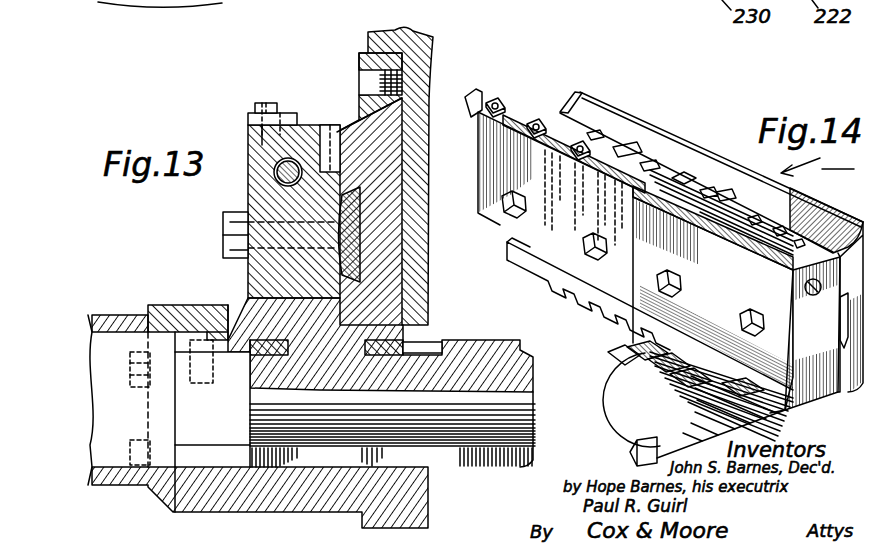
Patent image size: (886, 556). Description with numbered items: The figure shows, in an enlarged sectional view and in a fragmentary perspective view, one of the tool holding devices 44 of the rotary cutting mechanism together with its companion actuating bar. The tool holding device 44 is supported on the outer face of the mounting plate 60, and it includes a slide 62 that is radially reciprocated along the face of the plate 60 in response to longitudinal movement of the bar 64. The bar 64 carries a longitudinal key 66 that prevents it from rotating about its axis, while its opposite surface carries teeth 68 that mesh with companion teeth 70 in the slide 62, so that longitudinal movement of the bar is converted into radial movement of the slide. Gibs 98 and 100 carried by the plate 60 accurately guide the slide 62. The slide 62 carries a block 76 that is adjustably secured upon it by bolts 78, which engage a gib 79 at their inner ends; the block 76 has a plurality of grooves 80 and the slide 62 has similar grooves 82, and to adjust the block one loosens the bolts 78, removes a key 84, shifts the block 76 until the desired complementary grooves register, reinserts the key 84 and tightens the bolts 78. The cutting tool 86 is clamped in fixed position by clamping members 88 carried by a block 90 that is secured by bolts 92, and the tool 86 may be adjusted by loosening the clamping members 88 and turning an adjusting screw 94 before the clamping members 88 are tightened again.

In FIG. 14, the tool holding device 44 is at (817, 161).
In FIG. 13, the mounting plate 60 is at (408, 46).
In FIG. 13, the slide 62 is at (387, 290).
In FIG. 14, the slide 62 is at (823, 216).
In FIG. 14, the bar 64 is at (617, 403).
In FIG. 14, the longitudinal key 66 is at (637, 452).
In FIG. 14, the teeth 68 is at (640, 354).
In FIG. 13, the teeth 70 is at (410, 348).
In FIG. 14, the teeth 70 is at (717, 350).
In FIG. 13, the block 76 is at (265, 272).
In FIG. 14, the block 76 is at (661, 193).
In FIG. 13, the bolts 78 is at (236, 238).
In FIG. 14, the bolts 78 is at (747, 310).
In FIG. 13, the gib 79 is at (363, 205).
In FIG. 14, the gib 79 is at (842, 340).
In FIG. 14, the grooves 80 is at (603, 146).
In FIG. 14, the grooves 82 is at (630, 158).
In FIG. 13, the key 84 is at (326, 128).
In FIG. 14, the key 84 is at (687, 176).
In FIG. 13, the cutting tool 86 is at (262, 135).
In FIG. 14, the cutting tool 86 is at (473, 90).
In FIG. 13, the clamping members 88 is at (285, 113).
In FIG. 14, the clamping members 88 is at (578, 142).
In FIG. 14, the block 90 is at (490, 144).
In FIG. 14, the bolts 92 is at (507, 220).
In FIG. 13, the adjusting screw 94 is at (276, 178).
In FIG. 14, the adjusting screw 94 is at (815, 296).
In FIG. 13, the gib 98 is at (228, 306).
In FIG. 13, the gib 100 is at (359, 58).